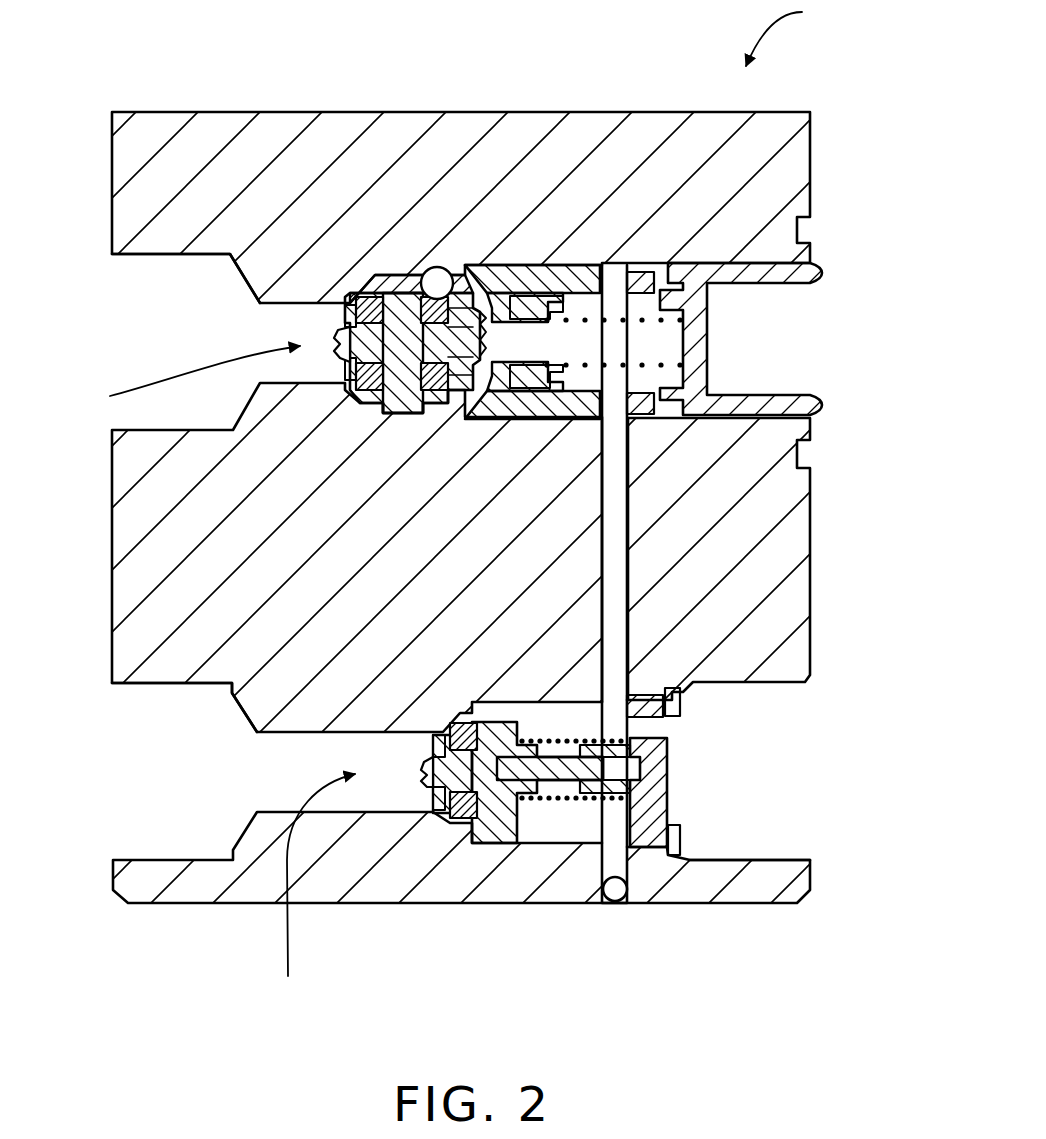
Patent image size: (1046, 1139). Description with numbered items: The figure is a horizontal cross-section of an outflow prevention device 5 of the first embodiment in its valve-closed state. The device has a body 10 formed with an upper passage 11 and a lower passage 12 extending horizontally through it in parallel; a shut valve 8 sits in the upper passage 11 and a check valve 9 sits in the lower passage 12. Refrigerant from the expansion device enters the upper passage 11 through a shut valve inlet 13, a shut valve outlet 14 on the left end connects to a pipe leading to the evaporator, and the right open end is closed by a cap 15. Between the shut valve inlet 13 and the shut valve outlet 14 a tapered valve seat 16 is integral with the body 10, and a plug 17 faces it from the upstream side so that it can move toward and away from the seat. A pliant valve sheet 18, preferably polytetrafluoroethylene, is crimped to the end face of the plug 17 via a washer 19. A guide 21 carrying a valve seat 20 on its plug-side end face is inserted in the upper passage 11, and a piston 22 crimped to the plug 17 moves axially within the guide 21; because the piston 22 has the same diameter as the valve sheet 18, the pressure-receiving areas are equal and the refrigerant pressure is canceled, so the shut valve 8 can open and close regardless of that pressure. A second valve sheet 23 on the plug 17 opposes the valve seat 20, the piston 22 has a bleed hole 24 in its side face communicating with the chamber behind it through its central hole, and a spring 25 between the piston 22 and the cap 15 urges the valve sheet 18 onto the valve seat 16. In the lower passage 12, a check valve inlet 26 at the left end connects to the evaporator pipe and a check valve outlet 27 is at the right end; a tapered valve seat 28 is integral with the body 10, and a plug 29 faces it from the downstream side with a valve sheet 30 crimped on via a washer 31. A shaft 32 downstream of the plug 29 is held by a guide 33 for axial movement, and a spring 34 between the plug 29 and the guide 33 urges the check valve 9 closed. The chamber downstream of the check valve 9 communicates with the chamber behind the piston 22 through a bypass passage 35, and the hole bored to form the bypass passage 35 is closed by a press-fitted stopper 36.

The outflow prevention device 5 is at (788, 33).
The shut valve 8 is at (190, 377).
The check valve 9 is at (316, 893).
The body 10 is at (812, 170).
The upper passage 11 is at (640, 420).
The lower passage 12 is at (528, 832).
The shut valve inlet 13 is at (437, 267).
The shut valve outlet 14 is at (145, 292).
The cap 15 is at (775, 283).
The valve seat 16 is at (360, 298).
The plug 17 is at (405, 292).
The valve sheet 18 is at (378, 292).
The washer 19 is at (340, 320).
The valve seat 20 is at (492, 306).
The guide 21 is at (560, 300).
The piston 22 is at (606, 316).
The valve sheet 23 is at (470, 300).
The bleed hole 24 is at (522, 266).
The spring 25 is at (640, 272).
The check valve inlet 26 is at (145, 756).
The check valve outlet 27 is at (775, 779).
The valve seat 28 is at (440, 722).
The plug 29 is at (490, 833).
The valve sheet 30 is at (455, 835).
The washer 31 is at (435, 796).
The shaft 32 is at (552, 782).
The guide 33 is at (667, 790).
The spring 34 is at (566, 802).
The bypass passage 35 is at (615, 563).
The stopper 36 is at (618, 902).